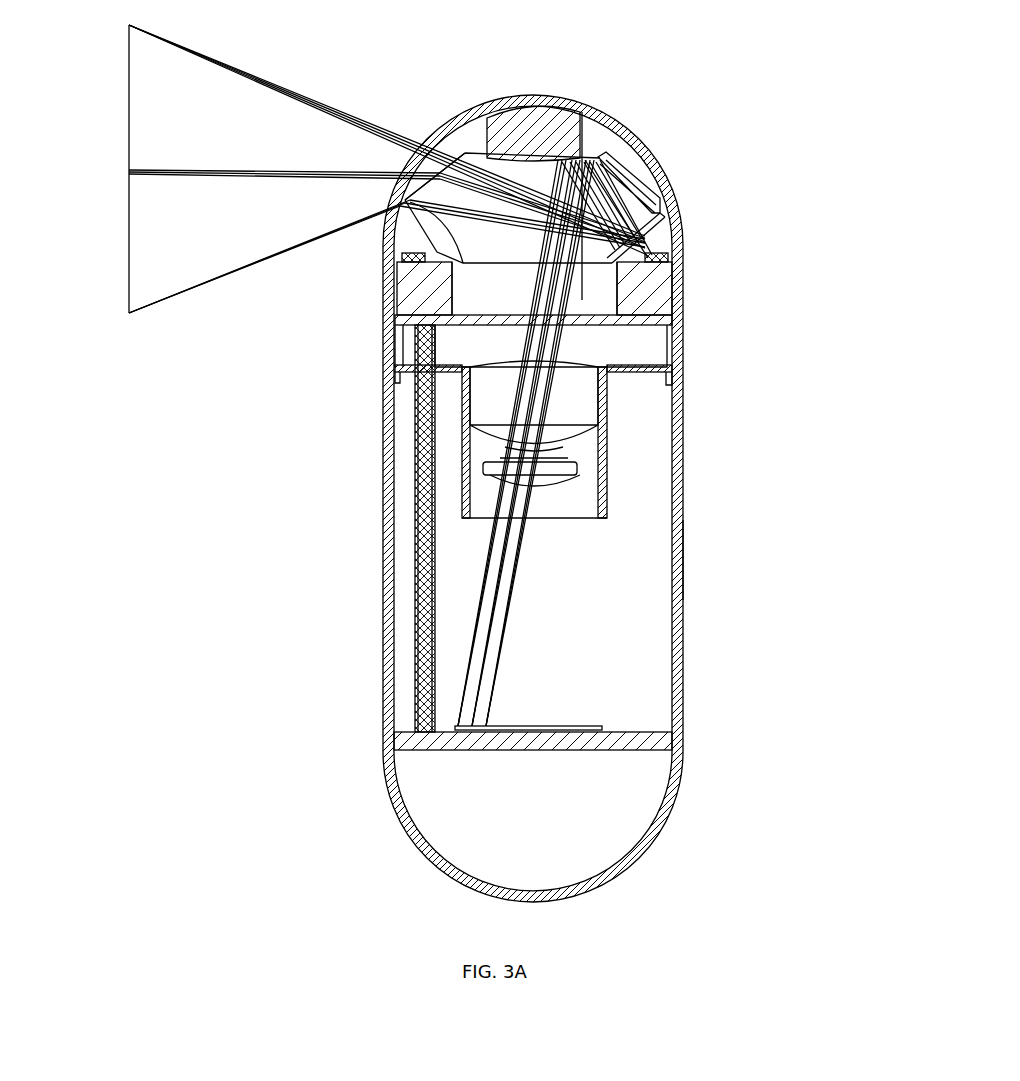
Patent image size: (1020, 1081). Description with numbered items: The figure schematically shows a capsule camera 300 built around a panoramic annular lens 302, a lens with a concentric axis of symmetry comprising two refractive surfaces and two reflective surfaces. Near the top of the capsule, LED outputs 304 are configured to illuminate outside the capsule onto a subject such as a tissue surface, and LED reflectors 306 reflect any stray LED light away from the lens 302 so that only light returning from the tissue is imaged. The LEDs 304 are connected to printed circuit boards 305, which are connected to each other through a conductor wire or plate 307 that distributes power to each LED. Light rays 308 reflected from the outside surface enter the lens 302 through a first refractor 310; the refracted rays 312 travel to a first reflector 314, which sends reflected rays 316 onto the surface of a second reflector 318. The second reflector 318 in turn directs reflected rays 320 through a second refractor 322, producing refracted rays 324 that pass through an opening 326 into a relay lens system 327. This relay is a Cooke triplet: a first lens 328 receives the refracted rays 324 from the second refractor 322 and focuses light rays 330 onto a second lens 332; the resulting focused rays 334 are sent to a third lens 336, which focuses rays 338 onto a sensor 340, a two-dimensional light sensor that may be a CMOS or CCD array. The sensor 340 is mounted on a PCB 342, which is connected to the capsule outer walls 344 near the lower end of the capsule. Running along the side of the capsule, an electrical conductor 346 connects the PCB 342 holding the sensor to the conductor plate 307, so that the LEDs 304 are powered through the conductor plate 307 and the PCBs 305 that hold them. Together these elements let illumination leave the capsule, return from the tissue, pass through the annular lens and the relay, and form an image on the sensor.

The capsule camera 300 is at (728, 483).
The panoramic annular lens 302 is at (625, 168).
The LED outputs 304 is at (668, 256).
The printed circuit boards 305 is at (660, 290).
The LED reflectors 306 is at (650, 238).
The conductor wire or plate 307 is at (672, 320).
The light rays 308 is at (164, 45).
The first refractor 310 is at (405, 165).
The refracted rays 312 is at (463, 210).
The first reflector 314 is at (655, 220).
The reflected rays 316 is at (657, 197).
The second reflector 318 is at (528, 160).
The reflected rays 320 is at (548, 250).
The second refractor 322 is at (400, 287).
The refracted rays 324 is at (540, 300).
The opening 326 is at (497, 325).
The relay lens system 327 is at (455, 455).
The first lens 328 is at (575, 365).
The light rays 330 is at (510, 405).
The second lens 332 is at (568, 445).
The focused rays 334 is at (577, 470).
The third lens 336 is at (565, 485).
The rays 338 is at (545, 545).
The sensor 340 is at (586, 705).
The PCB 342 is at (548, 751).
The capsule outer walls 344 is at (683, 558).
The electrical conductor 346 is at (412, 535).